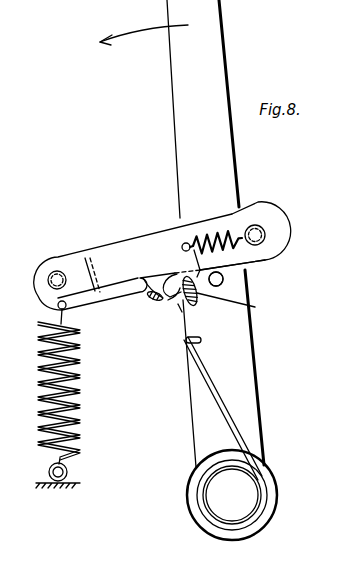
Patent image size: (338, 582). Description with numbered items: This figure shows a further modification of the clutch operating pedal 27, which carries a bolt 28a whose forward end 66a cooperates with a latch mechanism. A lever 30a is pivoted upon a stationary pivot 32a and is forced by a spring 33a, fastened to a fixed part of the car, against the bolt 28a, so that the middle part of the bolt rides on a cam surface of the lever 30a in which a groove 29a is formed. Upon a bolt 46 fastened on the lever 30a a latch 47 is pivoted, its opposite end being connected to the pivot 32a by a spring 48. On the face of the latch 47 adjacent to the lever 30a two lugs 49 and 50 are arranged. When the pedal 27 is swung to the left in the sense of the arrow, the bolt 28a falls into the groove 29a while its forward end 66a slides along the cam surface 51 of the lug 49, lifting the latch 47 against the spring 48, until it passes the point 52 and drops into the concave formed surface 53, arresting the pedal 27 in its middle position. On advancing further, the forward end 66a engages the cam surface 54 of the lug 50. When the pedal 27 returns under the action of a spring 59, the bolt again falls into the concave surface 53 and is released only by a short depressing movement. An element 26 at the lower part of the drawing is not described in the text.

The wheel 26 is at (246, 503).
The pedal 27 is at (226, 152).
The bolt 28a is at (223, 280).
The forward end of bolt 66a is at (216, 279).
The groove 29a is at (172, 295).
The lever 30a is at (278, 234).
The stationary pivot 32a is at (263, 226).
The spring 33a is at (80, 386).
The bolt 46 is at (55, 271).
The latch 47 is at (116, 252).
The spring 48 is at (232, 228).
The lug 49 is at (194, 298).
The lug 50 is at (154, 289).
The cam surface 51 is at (237, 305).
The point 52 is at (181, 311).
The concave formed surface 53 is at (173, 270).
The cam surface 54 is at (148, 293).
The spring 59 is at (231, 428).